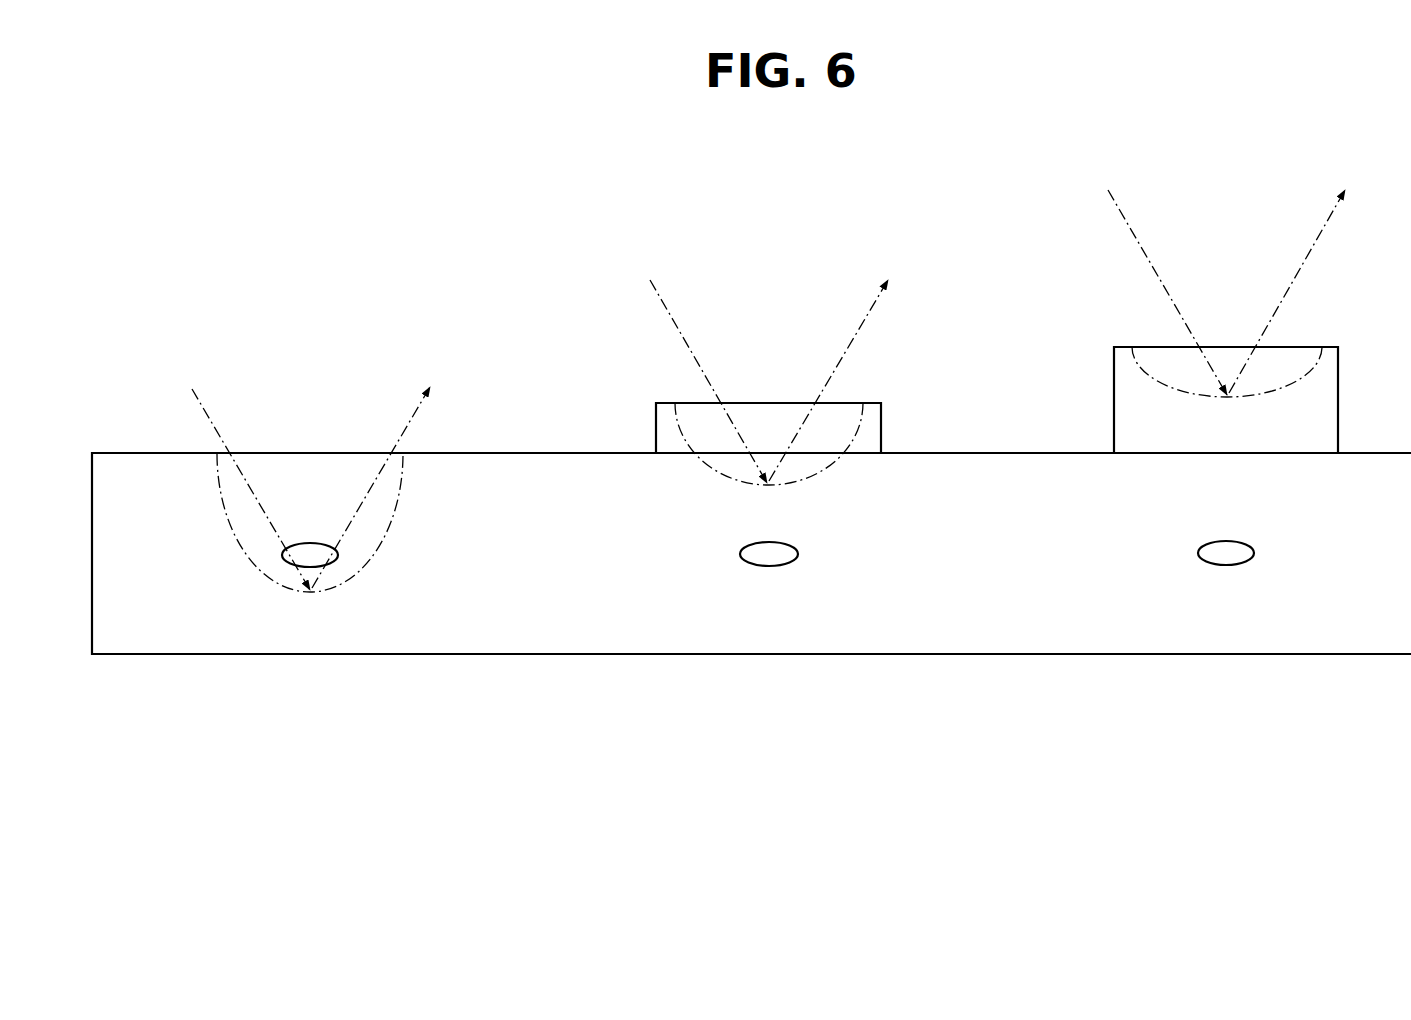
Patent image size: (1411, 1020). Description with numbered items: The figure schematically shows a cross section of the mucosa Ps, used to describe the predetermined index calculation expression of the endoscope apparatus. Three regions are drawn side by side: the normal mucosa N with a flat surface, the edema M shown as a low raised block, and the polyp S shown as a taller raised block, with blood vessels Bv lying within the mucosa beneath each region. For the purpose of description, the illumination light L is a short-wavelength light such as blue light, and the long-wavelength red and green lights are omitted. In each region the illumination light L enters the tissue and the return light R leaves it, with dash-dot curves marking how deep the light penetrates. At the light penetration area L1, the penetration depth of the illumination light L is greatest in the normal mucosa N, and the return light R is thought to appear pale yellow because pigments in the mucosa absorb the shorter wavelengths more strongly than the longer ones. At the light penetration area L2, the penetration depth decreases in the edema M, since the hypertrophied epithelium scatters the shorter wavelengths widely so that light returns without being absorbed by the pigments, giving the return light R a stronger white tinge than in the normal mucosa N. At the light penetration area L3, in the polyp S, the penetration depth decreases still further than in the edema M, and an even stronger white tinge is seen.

The substrate / sample Ps is at (720, 618).
The normal mucosa N is at (310, 453).
The edema M is at (827, 403).
The polyp S is at (1282, 347).
The illumination light L is at (702, 377).
The return light R is at (837, 376).
The light penetration area L1 is at (253, 562).
The light penetration area L2 is at (710, 467).
The light penetration area L3 is at (1148, 377).
The blood vessels Bv is at (338, 555).